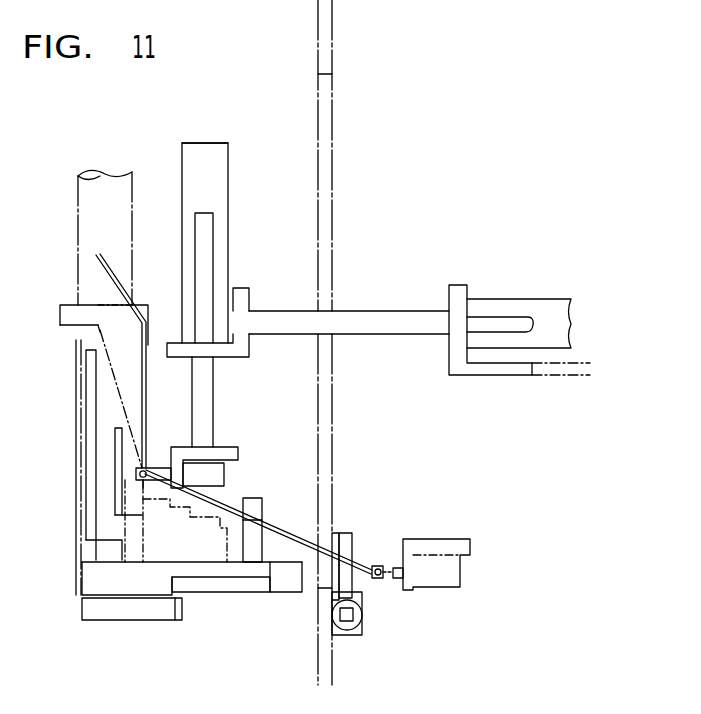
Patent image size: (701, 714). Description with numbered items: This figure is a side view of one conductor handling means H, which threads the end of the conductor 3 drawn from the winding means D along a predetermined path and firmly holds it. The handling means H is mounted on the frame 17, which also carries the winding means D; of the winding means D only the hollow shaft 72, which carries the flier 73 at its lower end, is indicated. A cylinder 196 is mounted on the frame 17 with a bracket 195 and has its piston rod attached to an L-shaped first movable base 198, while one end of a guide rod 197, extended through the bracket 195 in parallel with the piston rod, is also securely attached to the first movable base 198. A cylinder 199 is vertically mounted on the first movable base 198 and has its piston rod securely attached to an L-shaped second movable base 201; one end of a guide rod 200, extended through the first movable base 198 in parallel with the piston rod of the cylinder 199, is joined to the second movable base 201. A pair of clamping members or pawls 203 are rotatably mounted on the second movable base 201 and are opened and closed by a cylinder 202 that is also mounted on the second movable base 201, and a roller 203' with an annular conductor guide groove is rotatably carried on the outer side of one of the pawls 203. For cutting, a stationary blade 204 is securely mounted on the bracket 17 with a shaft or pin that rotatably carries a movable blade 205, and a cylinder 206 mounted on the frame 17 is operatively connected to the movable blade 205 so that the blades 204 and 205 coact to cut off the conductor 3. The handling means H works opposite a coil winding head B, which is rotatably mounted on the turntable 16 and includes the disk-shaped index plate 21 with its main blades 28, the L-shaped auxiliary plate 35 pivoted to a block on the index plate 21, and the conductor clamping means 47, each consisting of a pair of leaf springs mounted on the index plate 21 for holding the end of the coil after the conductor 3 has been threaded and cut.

The conductor 3 is at (147, 379).
The turntable 16 is at (268, 594).
The frame 17 is at (320, 666).
The index plate 21 is at (215, 576).
The main blades 28 is at (76, 430).
The auxiliary plate 35 is at (112, 487).
The conductor clamping means 47 is at (262, 516).
The hollow shaft 72 is at (82, 289).
The flier 73 is at (88, 334).
The bracket 195 is at (460, 292).
The cylinder 196 is at (528, 305).
The guide rod 197 is at (395, 311).
The first movable base 198 is at (245, 290).
The cylinder 199 is at (217, 160).
The guide rod 200 is at (204, 232).
The second movable base 201 is at (229, 456).
The cylinder 202 is at (224, 475).
The clamping members or pawls 203 is at (161, 444).
The roller 203' is at (160, 520).
The stationary blade 204 is at (338, 533).
The movable blade 205 is at (350, 534).
The cylinder 206 is at (362, 612).
The winding means D is at (77, 232).
The conductor handling means H is at (206, 143).
The coil winding head B is at (90, 622).